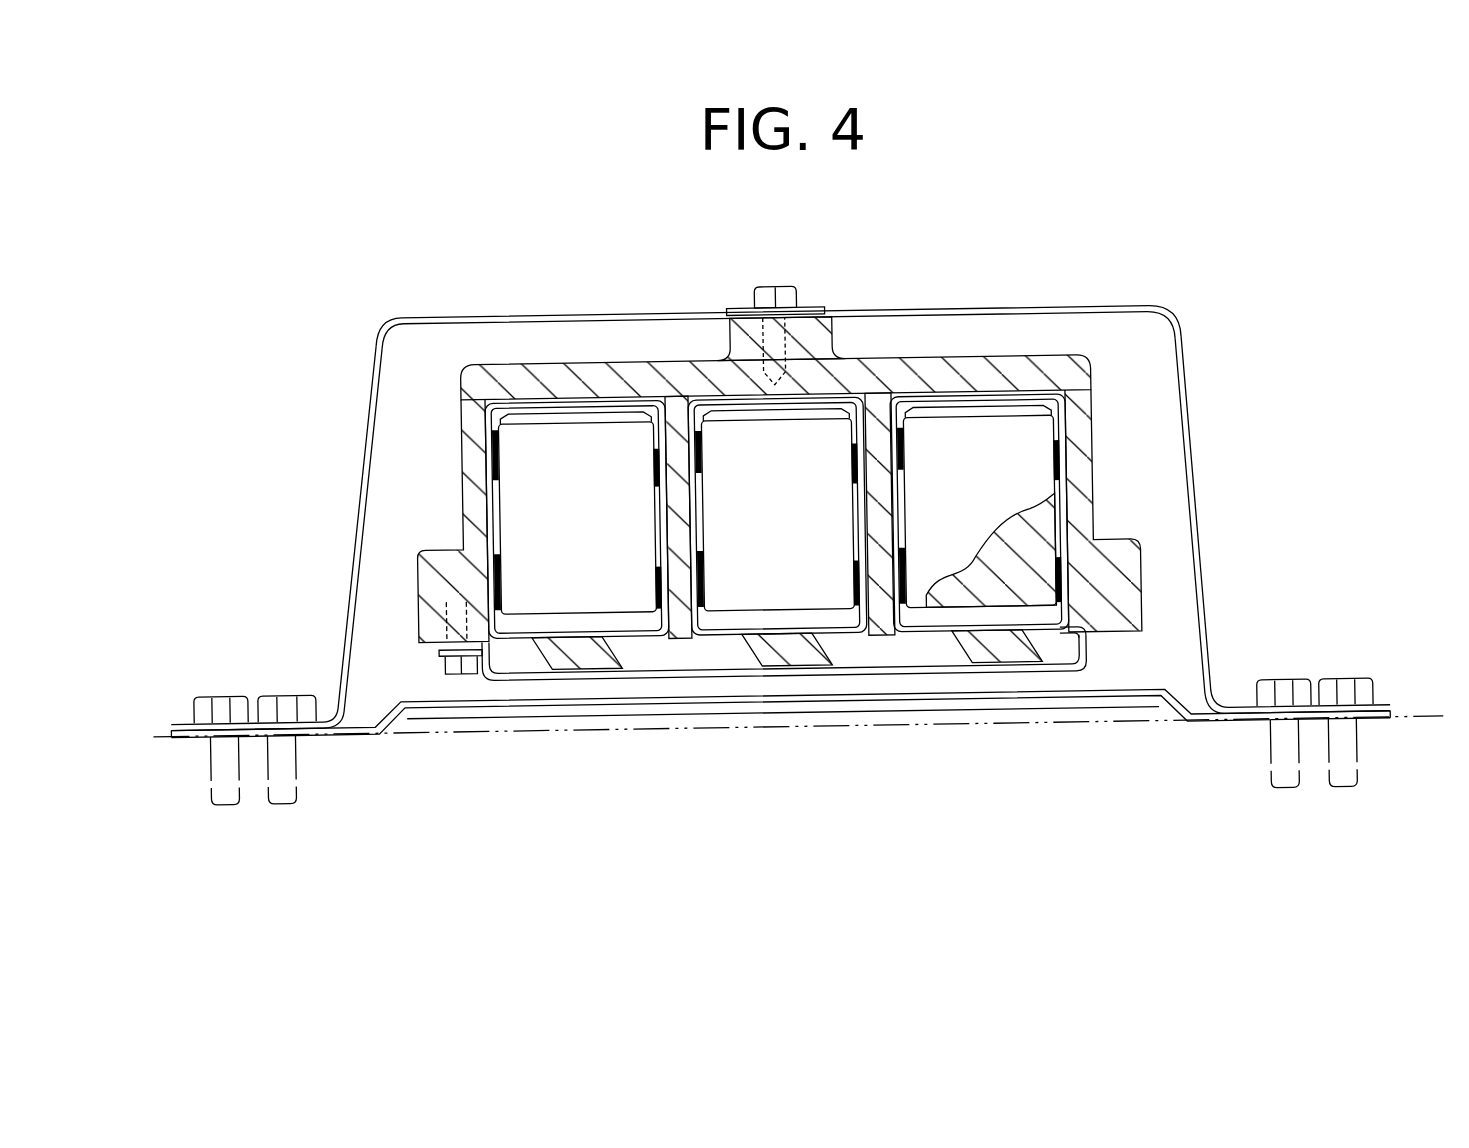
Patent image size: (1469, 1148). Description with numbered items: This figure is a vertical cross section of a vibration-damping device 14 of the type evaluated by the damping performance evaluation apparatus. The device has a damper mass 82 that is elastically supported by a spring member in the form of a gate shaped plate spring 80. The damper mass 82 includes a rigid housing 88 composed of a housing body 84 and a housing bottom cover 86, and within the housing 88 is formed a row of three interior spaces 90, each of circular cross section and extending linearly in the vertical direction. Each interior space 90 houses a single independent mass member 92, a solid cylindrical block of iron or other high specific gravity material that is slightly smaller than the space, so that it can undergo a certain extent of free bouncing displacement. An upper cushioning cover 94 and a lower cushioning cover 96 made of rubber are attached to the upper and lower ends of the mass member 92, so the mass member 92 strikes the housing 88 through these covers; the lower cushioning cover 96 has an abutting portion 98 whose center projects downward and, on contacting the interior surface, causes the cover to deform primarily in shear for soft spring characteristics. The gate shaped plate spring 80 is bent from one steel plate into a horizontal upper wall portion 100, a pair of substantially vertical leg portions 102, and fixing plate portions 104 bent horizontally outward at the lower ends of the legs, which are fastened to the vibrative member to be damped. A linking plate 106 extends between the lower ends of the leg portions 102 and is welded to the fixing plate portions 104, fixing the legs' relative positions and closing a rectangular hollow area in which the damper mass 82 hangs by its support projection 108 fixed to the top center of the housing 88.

The vibration-damping device 14 is at (795, 518).
The gate shaped plate spring 80 is at (776, 469).
The damper mass 82 is at (462, 388).
The housing body 84 is at (1081, 478).
The housing bottom cover 86 is at (1052, 680).
The housing 88 is at (864, 682).
The interior space 90 is at (708, 397).
The mass member 92 is at (811, 438).
The upper cushioning cover 94 is at (552, 394).
The lower cushioning cover 96 is at (512, 642).
The abutting portion 98 is at (588, 655).
The horizontal upper wall portion 100 is at (515, 314).
The leg portion 102 is at (365, 445).
The fixing plate portion 104 is at (187, 691).
The linking plate 106 is at (1114, 714).
The support projection 108 is at (797, 310).